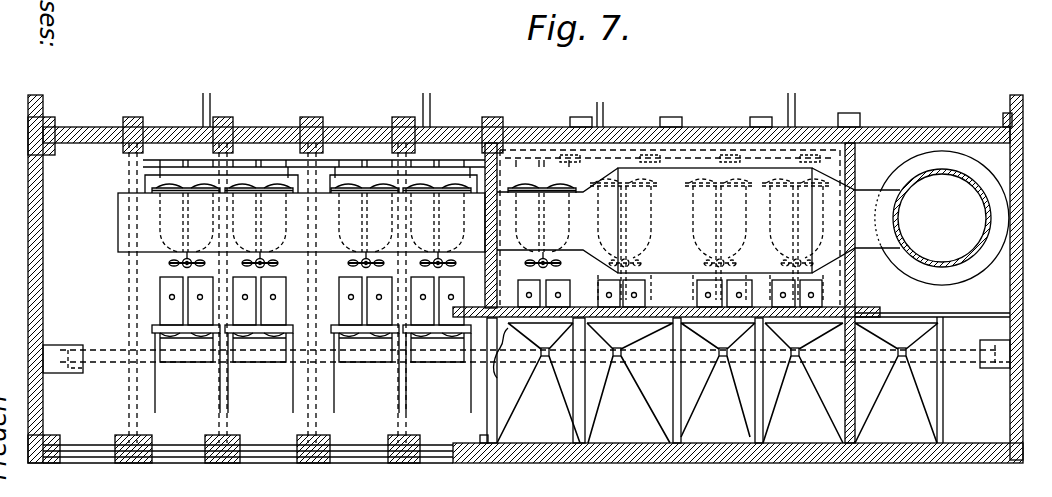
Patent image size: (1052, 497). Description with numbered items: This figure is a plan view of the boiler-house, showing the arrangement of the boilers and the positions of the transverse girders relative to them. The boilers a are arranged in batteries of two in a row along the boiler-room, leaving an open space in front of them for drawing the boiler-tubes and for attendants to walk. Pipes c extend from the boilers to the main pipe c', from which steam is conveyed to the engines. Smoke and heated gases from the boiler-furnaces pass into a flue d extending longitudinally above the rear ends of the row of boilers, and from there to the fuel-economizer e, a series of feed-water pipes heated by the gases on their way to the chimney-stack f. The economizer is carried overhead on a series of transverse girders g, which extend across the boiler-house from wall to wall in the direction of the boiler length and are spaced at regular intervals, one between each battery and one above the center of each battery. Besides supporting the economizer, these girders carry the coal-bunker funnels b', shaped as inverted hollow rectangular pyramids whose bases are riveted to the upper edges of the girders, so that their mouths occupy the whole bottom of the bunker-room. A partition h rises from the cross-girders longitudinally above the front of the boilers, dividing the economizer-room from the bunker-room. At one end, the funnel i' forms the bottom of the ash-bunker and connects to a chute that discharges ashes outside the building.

The boiler a is at (168, 310).
The coal-bunker funnel b' is at (670, 383).
The steam pipe c is at (328, 266).
The main pipe c' is at (364, 196).
The flue d is at (132, 217).
The fuel-economizer e is at (732, 182).
The chimney-stack f is at (942, 218).
The transverse girder g is at (497, 380).
The partition h is at (487, 323).
The ash-bunker funnel i' is at (899, 380).